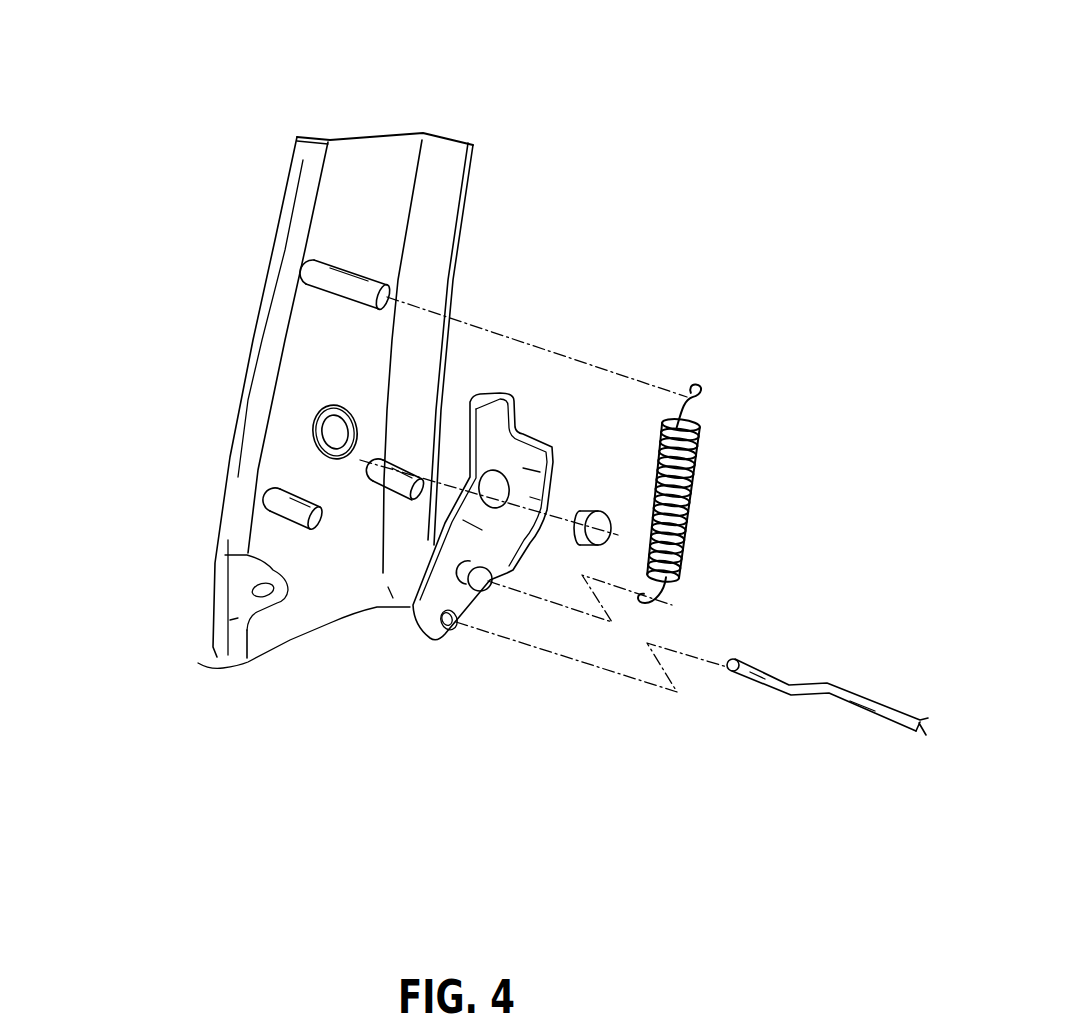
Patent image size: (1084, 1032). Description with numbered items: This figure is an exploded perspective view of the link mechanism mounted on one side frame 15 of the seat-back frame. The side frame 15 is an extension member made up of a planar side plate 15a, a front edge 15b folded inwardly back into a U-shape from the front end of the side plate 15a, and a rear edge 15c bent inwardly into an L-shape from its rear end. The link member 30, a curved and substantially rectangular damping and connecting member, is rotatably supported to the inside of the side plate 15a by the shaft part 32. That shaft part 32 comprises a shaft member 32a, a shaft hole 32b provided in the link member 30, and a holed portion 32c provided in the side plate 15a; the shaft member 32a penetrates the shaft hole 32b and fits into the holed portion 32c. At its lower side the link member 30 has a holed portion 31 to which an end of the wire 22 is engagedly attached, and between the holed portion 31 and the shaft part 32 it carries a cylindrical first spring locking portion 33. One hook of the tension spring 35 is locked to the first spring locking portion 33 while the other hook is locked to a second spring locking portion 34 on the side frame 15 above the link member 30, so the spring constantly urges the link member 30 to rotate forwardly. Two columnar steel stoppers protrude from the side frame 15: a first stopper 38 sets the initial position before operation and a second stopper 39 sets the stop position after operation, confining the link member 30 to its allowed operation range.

The side frame 15 is at (533, 57).
The side plate 15a is at (372, 145).
The front edge 15b is at (312, 140).
The rear edge 15c is at (455, 147).
The second spring locking portion 34 is at (327, 270).
The second stopper 39 is at (325, 462).
The first stopper 38 is at (280, 512).
The shaft part 32 is at (757, 233).
The shaft member 32a is at (603, 512).
The shaft hole 32b is at (500, 470).
The holed portion 32c is at (370, 405).
The tension spring 35 is at (693, 418).
The wire 22 is at (785, 678).
The link member 30 is at (517, 567).
The holed portion 31 is at (449, 630).
The first spring locking portion 33 is at (465, 580).